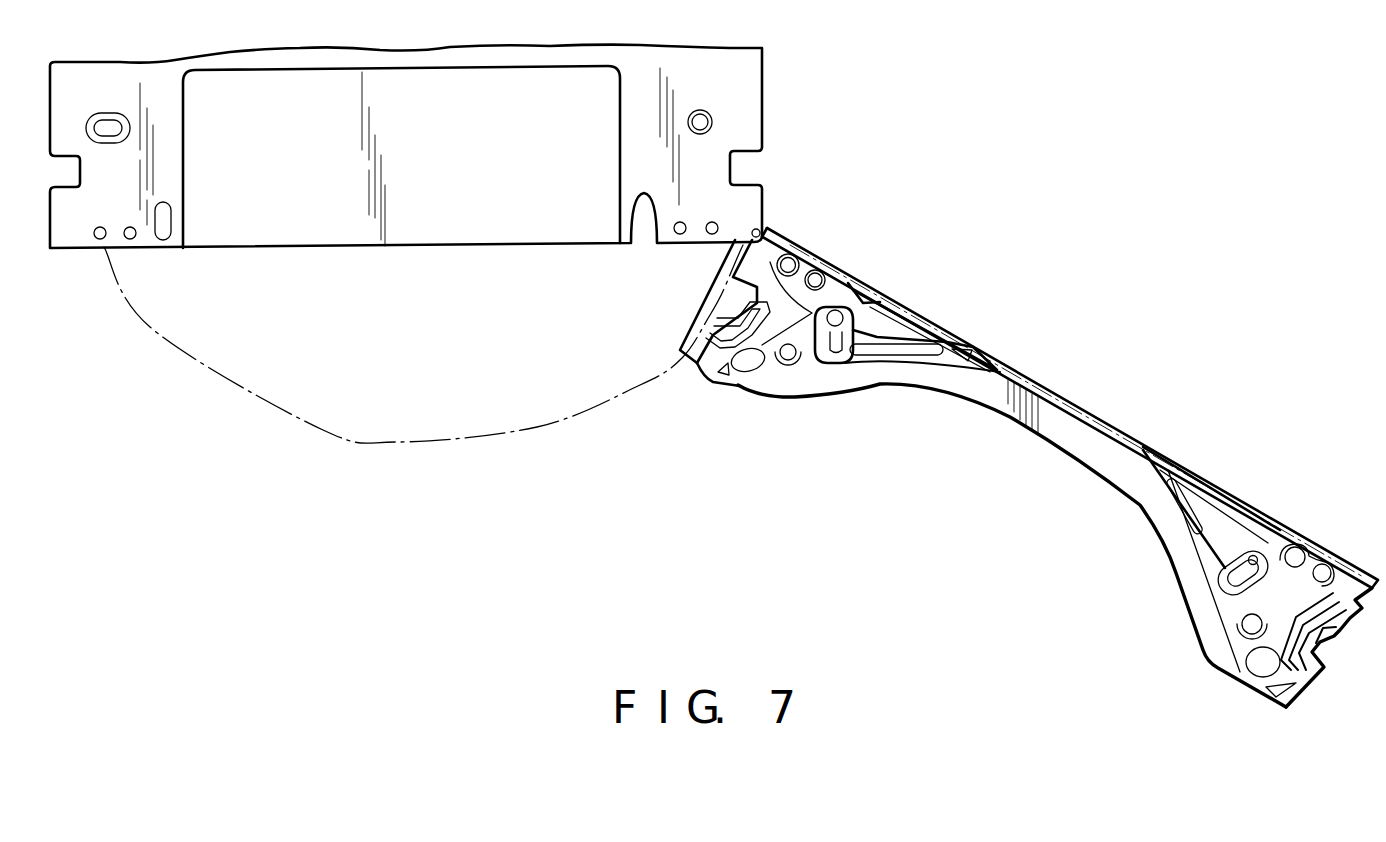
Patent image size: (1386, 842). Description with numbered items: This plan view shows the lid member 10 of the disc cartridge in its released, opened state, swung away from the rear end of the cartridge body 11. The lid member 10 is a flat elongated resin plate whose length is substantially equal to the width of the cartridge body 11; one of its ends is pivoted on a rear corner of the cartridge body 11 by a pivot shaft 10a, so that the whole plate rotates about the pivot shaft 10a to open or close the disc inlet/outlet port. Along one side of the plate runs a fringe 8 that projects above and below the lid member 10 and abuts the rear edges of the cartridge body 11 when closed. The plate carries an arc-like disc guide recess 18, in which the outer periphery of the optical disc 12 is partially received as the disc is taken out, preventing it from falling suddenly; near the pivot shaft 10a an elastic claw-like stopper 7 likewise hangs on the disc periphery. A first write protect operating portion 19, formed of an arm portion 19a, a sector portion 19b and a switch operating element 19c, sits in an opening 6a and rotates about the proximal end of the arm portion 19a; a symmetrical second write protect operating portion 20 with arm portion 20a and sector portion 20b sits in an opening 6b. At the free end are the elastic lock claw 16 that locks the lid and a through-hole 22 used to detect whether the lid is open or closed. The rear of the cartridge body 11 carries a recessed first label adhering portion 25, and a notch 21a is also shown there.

The cartridge body 11 is at (768, 122).
The pivot shaft 10a is at (766, 230).
The first label adhering portion 25 is at (303, 248).
The notch 21a is at (641, 250).
The optical disc 12 is at (418, 430).
The lid member 10 is at (1078, 402).
The disc guide recess 18 is at (1100, 470).
The stopper 7 is at (692, 382).
The first write protect operating portion 19 is at (873, 328).
The arm portion 19a is at (905, 360).
The sector portion 19b is at (835, 352).
The switch operating element 19c is at (855, 300).
The opening 6a is at (915, 333).
The fringe 8 is at (968, 347).
The through-hole 22 is at (1250, 627).
The lock claw 16 is at (1355, 618).
The second write protect operating portion 20 is at (1268, 547).
The arm portion 20a is at (1196, 482).
The sector portion 20b is at (1230, 585).
The opening 6b is at (1230, 522).